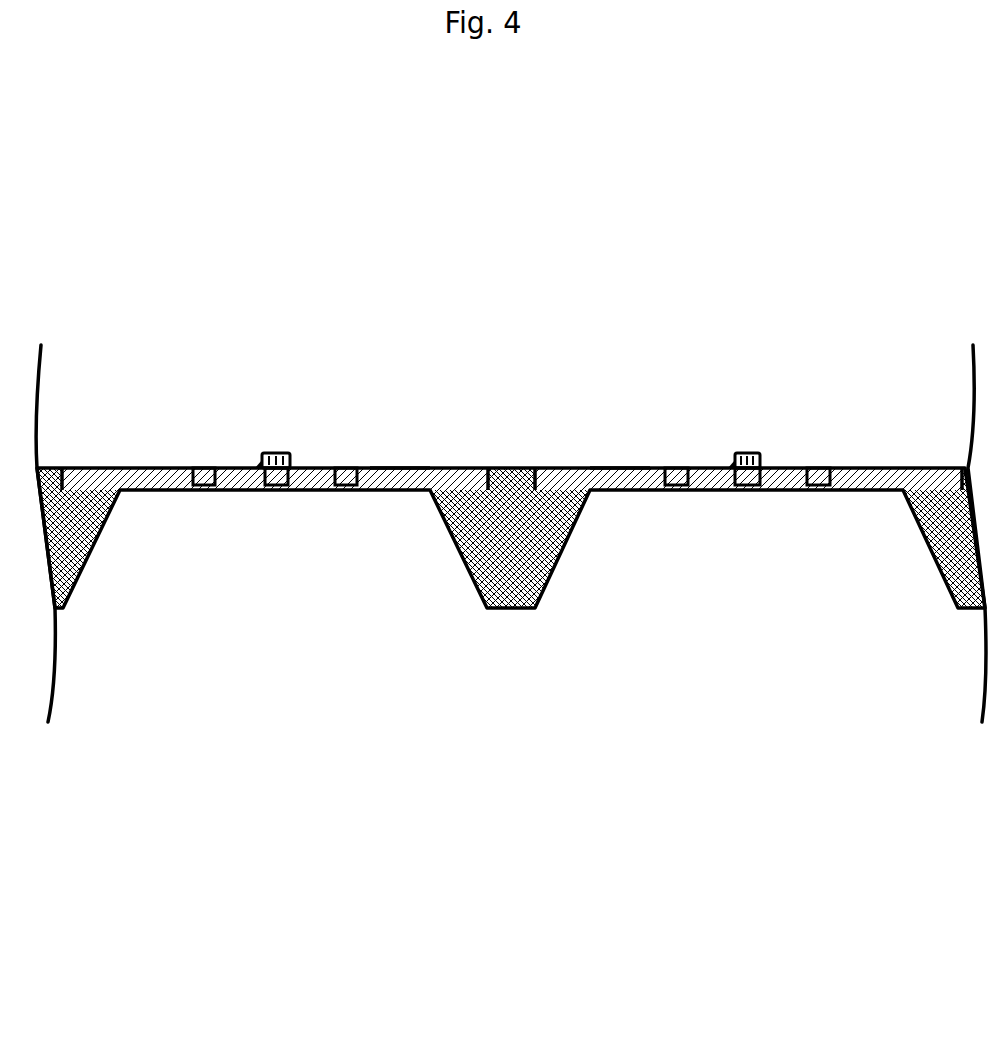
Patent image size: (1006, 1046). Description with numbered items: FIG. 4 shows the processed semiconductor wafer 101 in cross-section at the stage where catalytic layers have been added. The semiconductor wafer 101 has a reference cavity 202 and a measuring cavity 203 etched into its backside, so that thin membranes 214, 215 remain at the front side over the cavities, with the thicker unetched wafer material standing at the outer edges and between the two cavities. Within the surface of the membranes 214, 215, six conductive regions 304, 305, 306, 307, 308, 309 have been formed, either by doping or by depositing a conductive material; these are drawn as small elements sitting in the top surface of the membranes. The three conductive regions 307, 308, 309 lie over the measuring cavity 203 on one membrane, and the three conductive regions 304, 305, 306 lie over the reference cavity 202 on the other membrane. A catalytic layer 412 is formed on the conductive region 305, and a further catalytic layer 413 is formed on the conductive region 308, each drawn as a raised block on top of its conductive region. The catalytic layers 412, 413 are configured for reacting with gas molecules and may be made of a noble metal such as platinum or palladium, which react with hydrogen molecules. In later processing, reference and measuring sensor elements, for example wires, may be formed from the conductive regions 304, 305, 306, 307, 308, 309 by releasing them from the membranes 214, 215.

The semiconductor wafer 101 is at (513, 547).
The reference cavity 202 is at (627, 547).
The measuring cavity 203 is at (377, 547).
The membrane 214 is at (168, 473).
The membrane 215 is at (780, 477).
The conductive region 304 is at (673, 480).
The conductive region 305 is at (747, 490).
The conductive region 306 is at (818, 483).
The conductive region 307 is at (207, 475).
The conductive region 308 is at (276, 490).
The conductive region 309 is at (347, 483).
The catalytic layer 412 is at (735, 461).
The further catalytic layer 413 is at (262, 461).